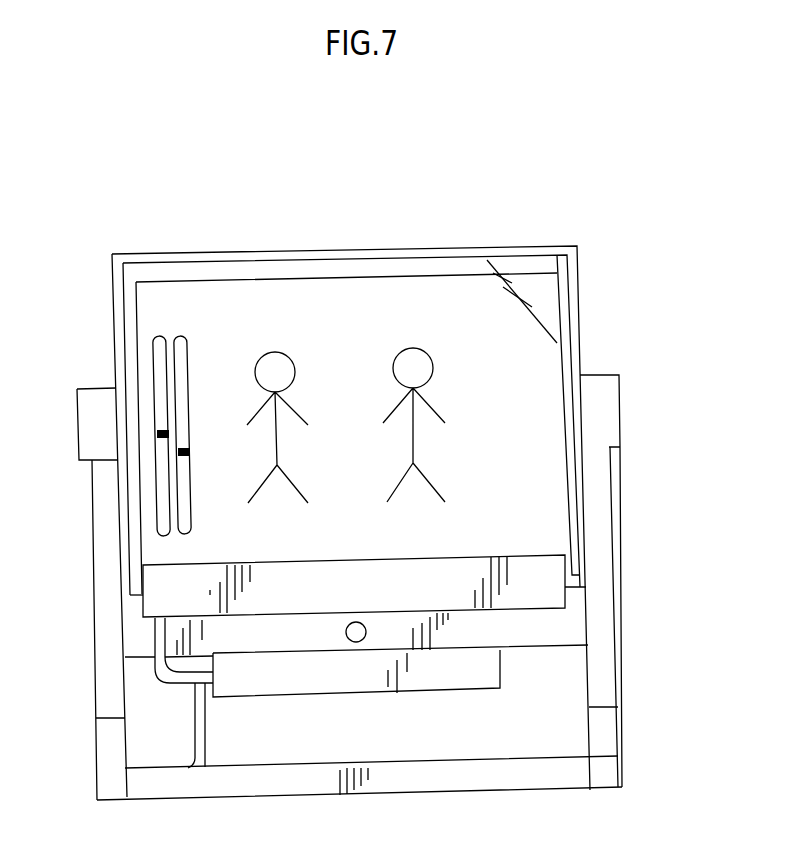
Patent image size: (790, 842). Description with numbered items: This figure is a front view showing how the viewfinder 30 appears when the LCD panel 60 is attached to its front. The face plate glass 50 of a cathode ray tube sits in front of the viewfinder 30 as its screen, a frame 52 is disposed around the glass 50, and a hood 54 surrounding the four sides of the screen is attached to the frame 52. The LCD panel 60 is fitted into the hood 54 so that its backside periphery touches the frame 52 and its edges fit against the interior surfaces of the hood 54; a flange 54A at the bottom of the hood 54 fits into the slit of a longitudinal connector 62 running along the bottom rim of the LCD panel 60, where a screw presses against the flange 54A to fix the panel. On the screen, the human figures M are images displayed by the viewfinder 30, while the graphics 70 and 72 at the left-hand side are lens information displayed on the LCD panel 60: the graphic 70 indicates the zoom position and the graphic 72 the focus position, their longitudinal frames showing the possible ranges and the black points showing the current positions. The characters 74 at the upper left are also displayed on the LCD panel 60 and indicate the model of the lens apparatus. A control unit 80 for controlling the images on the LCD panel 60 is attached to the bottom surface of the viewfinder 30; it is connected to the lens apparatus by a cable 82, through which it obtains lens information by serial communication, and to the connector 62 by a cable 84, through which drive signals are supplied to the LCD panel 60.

The viewfinder 30 is at (596, 293).
The frame 52 is at (537, 260).
The hood 54 is at (277, 252).
The flange 54A is at (129, 597).
The LCD panel 60 is at (535, 360).
The face plate glass 50 is at (512, 290).
The connector 62 is at (537, 598).
The graphic 70 is at (160, 526).
The graphic 72 is at (187, 528).
The characters 74 is at (147, 299).
The control unit 80 is at (457, 675).
The cable 82 is at (206, 737).
The cable 84 is at (158, 672).
The human figures M is at (393, 352).